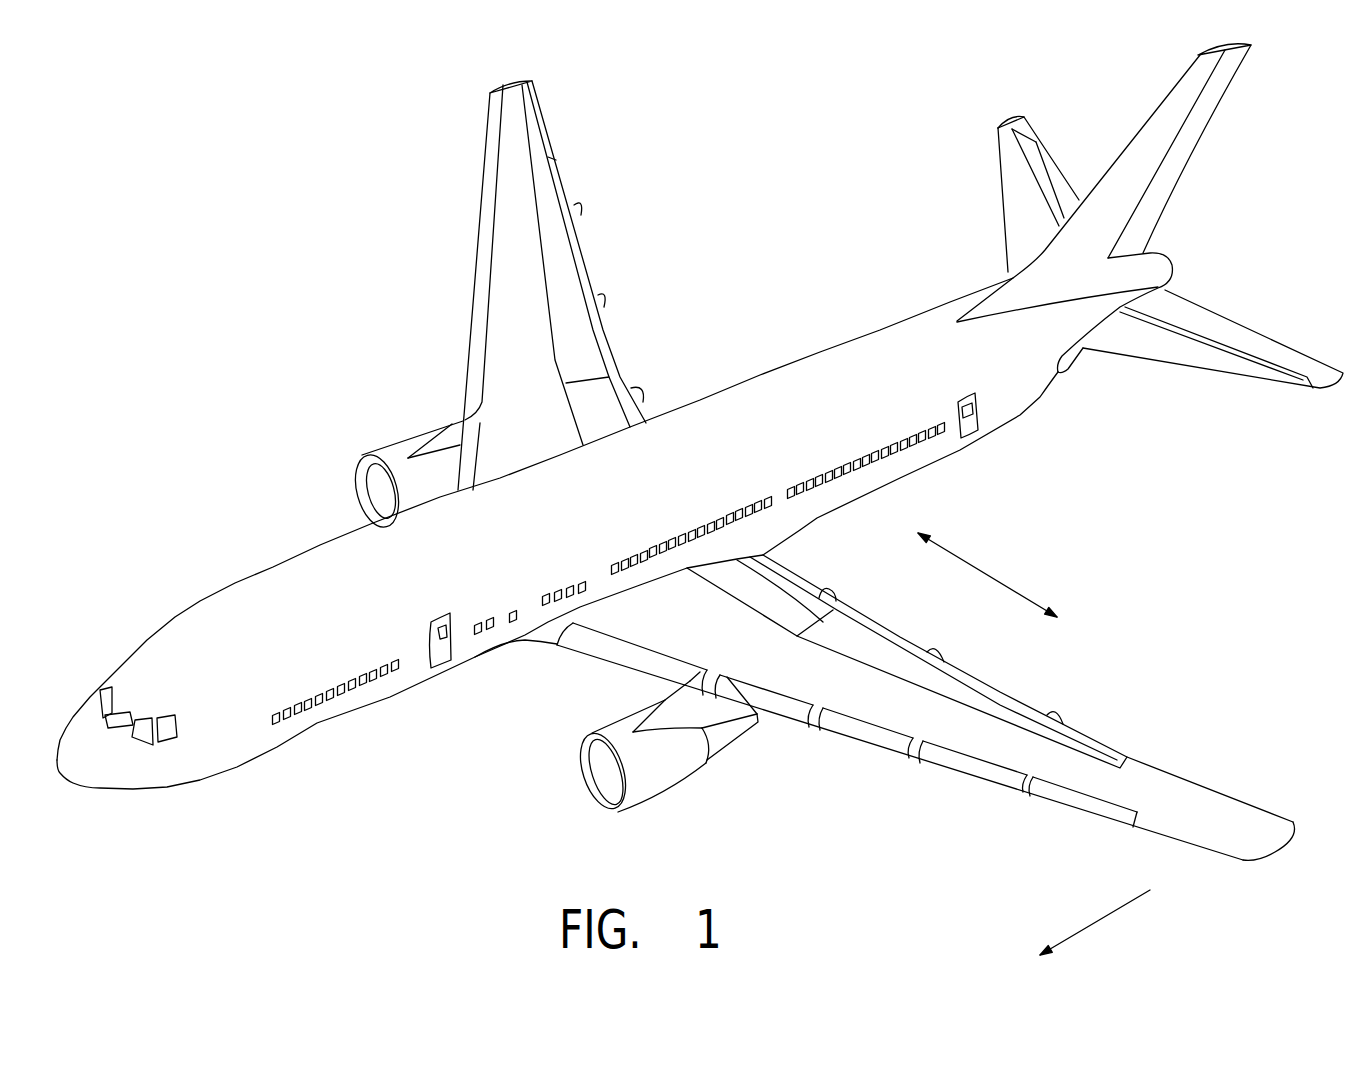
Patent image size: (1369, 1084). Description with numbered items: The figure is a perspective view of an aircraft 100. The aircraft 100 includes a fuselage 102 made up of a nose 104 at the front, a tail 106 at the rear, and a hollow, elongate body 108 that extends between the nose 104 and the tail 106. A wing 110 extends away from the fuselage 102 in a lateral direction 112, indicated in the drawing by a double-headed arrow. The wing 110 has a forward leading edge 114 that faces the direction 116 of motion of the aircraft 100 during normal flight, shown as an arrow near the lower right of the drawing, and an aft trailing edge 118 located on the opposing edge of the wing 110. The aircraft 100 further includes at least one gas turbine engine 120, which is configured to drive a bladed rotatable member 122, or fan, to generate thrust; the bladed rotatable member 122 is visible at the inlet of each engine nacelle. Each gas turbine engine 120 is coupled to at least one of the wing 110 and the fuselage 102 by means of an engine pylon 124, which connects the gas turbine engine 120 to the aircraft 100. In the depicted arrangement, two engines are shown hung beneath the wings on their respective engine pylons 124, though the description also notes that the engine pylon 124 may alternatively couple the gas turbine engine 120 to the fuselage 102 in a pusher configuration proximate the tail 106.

The aircraft 100 is at (320, 288).
The fuselage 102 is at (718, 432).
The nose 104 is at (169, 652).
The tail 106 is at (1055, 388).
The hollow, elongate body 108 is at (488, 577).
The wing 110 is at (915, 727).
The lateral direction 112 is at (973, 563).
The forward leading edge 114 is at (1140, 827).
The direction of motion 116 is at (1132, 925).
The aft trailing edge 118 is at (1182, 775).
The gas turbine engine 120 is at (390, 453).
The bladed rotatable member 122 is at (610, 778).
The engine pylon 124 is at (442, 430).